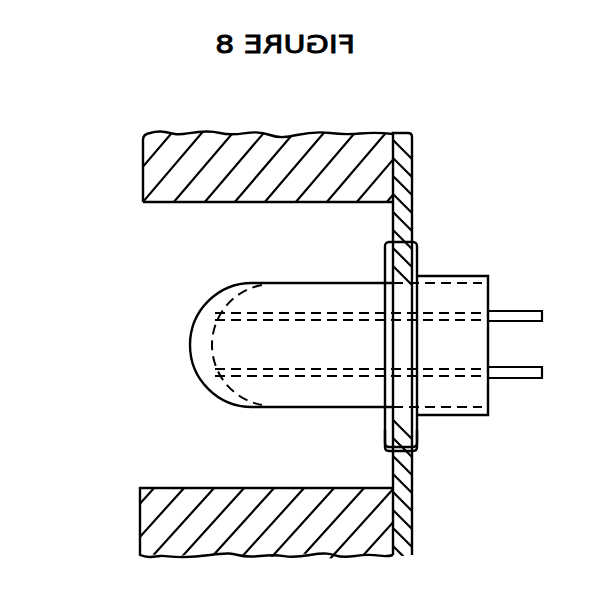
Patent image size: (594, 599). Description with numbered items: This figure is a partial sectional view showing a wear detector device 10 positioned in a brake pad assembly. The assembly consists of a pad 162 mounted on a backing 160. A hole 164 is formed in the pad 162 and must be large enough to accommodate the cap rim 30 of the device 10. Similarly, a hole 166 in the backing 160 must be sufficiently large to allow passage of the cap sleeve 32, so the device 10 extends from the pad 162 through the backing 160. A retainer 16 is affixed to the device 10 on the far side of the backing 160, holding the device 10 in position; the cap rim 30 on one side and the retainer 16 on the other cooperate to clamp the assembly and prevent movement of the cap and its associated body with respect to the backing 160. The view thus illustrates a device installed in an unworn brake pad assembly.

The device 10 is at (200, 380).
The retainer 16 is at (417, 438).
The cap rim 30 is at (384, 424).
The cap sleeve 32 is at (463, 416).
The backing 160 is at (402, 528).
The pad 162 is at (157, 190).
The hole 164 is at (245, 203).
The hole 166 is at (478, 276).